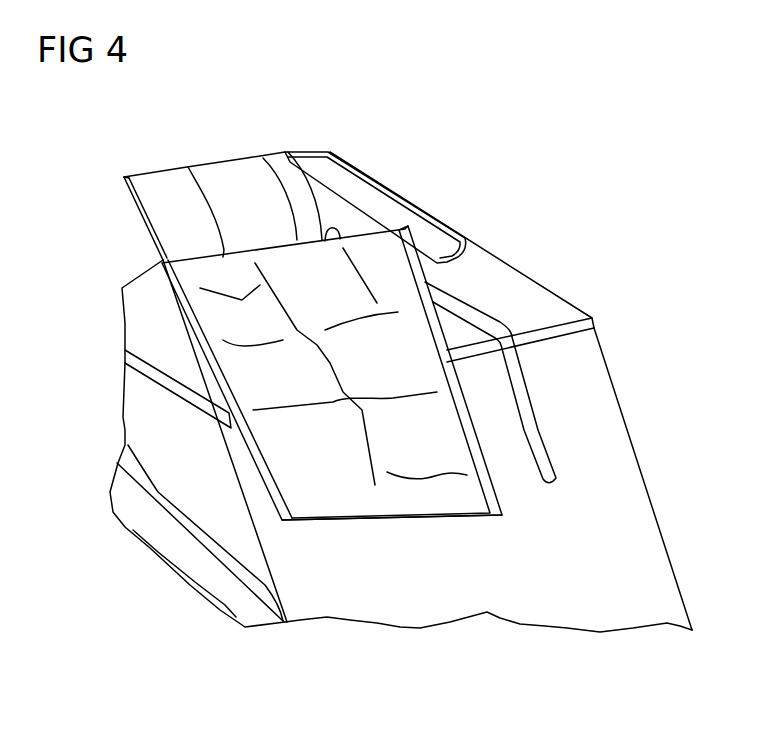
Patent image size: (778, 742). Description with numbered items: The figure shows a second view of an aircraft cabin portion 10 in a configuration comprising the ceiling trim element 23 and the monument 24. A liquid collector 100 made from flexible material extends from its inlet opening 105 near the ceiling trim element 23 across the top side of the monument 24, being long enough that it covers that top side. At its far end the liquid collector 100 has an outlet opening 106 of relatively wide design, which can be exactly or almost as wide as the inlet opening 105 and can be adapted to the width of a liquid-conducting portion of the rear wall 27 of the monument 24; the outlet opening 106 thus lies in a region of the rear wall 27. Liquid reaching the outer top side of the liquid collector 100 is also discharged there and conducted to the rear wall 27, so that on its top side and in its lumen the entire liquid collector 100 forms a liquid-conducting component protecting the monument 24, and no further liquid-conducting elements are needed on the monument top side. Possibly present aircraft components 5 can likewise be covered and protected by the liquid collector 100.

The assembly 10 is at (655, 278).
The ceiling trim element 23 is at (215, 177).
The monument 24 is at (532, 290).
The rear wall 27 is at (632, 477).
The aircraft components 5 is at (530, 402).
The liquid collector 100 is at (215, 317).
The inlet opening 105 is at (263, 158).
The outlet opening 106 is at (370, 522).